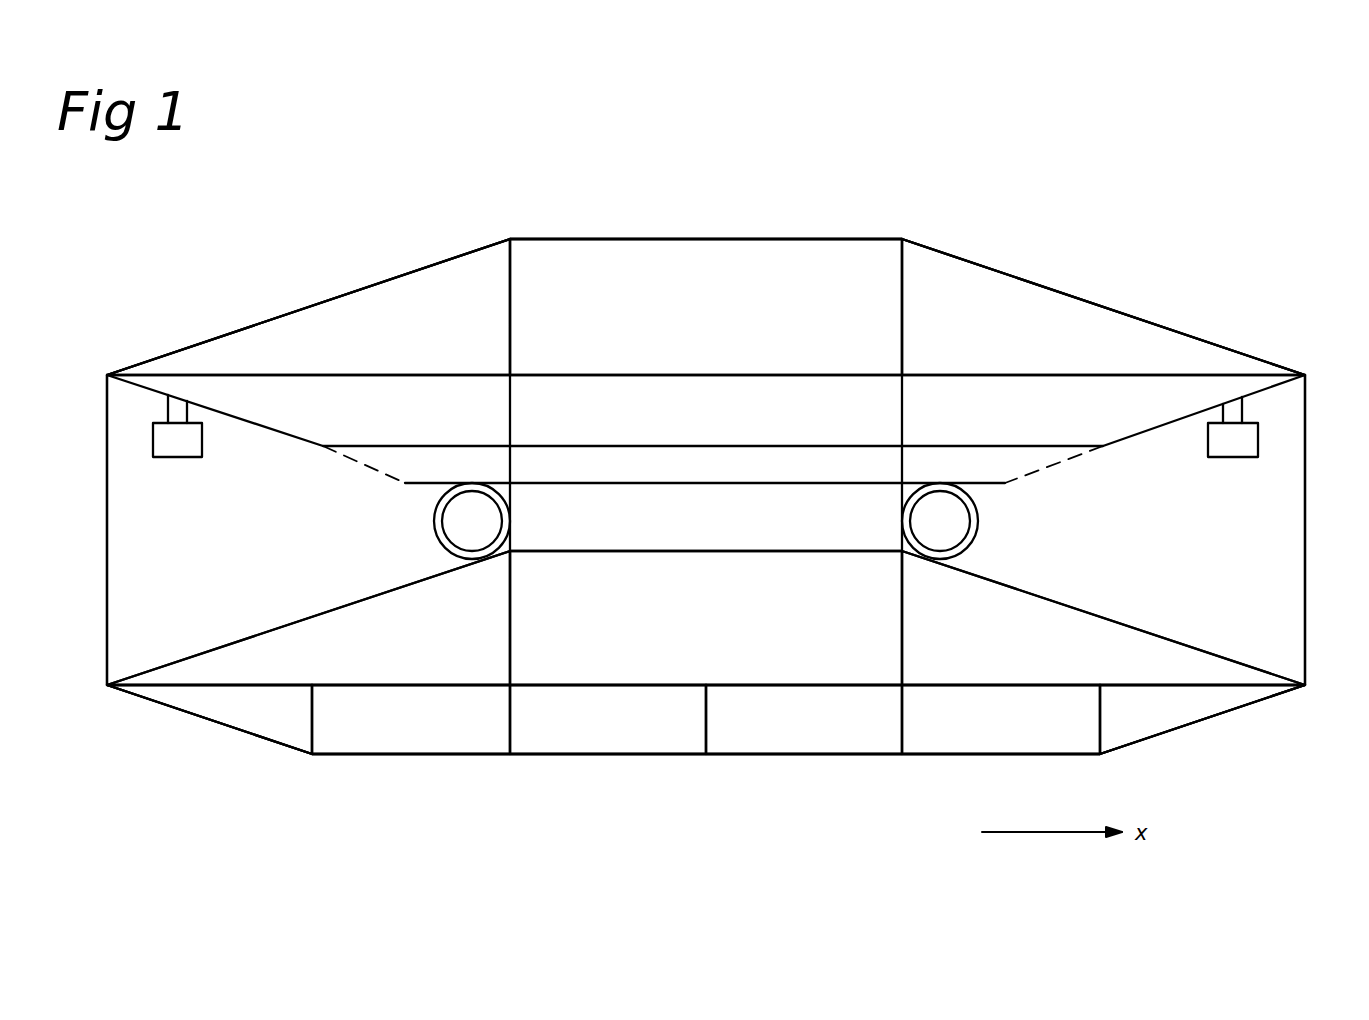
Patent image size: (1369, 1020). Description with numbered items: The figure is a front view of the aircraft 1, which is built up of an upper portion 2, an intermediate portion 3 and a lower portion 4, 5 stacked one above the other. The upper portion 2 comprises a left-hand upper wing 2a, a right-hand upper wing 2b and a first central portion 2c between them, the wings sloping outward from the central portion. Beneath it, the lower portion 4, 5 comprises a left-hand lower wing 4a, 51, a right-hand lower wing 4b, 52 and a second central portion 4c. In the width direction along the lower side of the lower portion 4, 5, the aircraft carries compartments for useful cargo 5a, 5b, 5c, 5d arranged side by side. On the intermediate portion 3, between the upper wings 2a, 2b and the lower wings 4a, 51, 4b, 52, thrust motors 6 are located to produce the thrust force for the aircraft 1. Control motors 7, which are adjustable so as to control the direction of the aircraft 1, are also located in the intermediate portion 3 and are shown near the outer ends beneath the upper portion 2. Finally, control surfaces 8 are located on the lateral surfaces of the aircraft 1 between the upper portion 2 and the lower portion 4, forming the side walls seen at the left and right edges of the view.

The aircraft 1 is at (1007, 155).
The upper portion 2 is at (213, 335).
The left-hand upper wing 2a is at (391, 347).
The right-hand upper wing 2b is at (1034, 347).
The first central portion 2c is at (728, 347).
The intermediate portion 3 is at (725, 529).
The lower portion 4 is at (215, 650).
The left-hand lower wing 4a is at (434, 645).
The right-hand lower wing 4b is at (1010, 645).
The second central portion 4c is at (727, 645).
The lower portion 5 is at (200, 718).
The compartment for useful cargo 5a is at (434, 730).
The compartment for useful cargo 5b is at (626, 730).
The compartment for useful cargo 5c is at (822, 730).
The compartment for useful cargo 5d is at (1018, 730).
The left-hand lower wing 51 is at (257, 703).
The right-hand lower wing 52 is at (1165, 713).
The thrust motors 6 is at (434, 521).
The control motors 7 is at (165, 440).
The control surfaces 8 is at (107, 566).